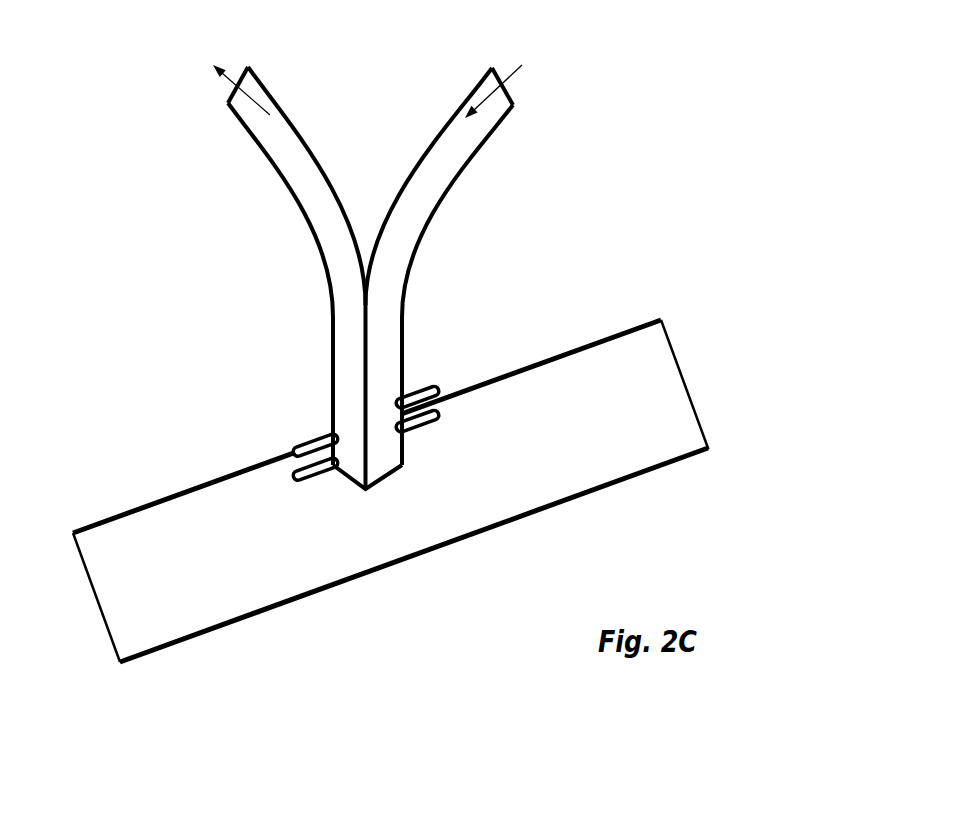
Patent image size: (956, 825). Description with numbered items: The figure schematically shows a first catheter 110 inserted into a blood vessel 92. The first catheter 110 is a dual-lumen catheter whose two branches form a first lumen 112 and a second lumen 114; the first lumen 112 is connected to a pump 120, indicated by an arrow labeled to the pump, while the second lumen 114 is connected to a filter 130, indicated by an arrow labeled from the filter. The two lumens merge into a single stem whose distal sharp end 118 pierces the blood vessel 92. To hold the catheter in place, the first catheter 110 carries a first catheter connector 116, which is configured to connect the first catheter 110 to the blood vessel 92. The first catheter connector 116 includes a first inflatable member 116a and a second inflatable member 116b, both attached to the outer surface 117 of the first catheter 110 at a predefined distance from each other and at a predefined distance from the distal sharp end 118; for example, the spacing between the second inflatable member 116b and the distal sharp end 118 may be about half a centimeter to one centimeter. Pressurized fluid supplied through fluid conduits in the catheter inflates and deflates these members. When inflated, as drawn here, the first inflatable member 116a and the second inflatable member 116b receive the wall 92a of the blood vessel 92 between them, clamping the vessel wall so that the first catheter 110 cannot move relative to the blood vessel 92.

The blood vessel 92 is at (685, 377).
The wall of blood vessel 92a is at (628, 327).
The first catheter 110 is at (258, 206).
The first lumen 112 is at (308, 138).
The second lumen 114 is at (467, 158).
The first catheter connector 116 is at (547, 327).
The first inflatable member 116a is at (433, 387).
The second inflatable member 116b is at (447, 410).
The outer surface 117 is at (332, 357).
The distal sharp end 118 is at (364, 490).
The pump 120 is at (205, 73).
The filter 130 is at (539, 76).